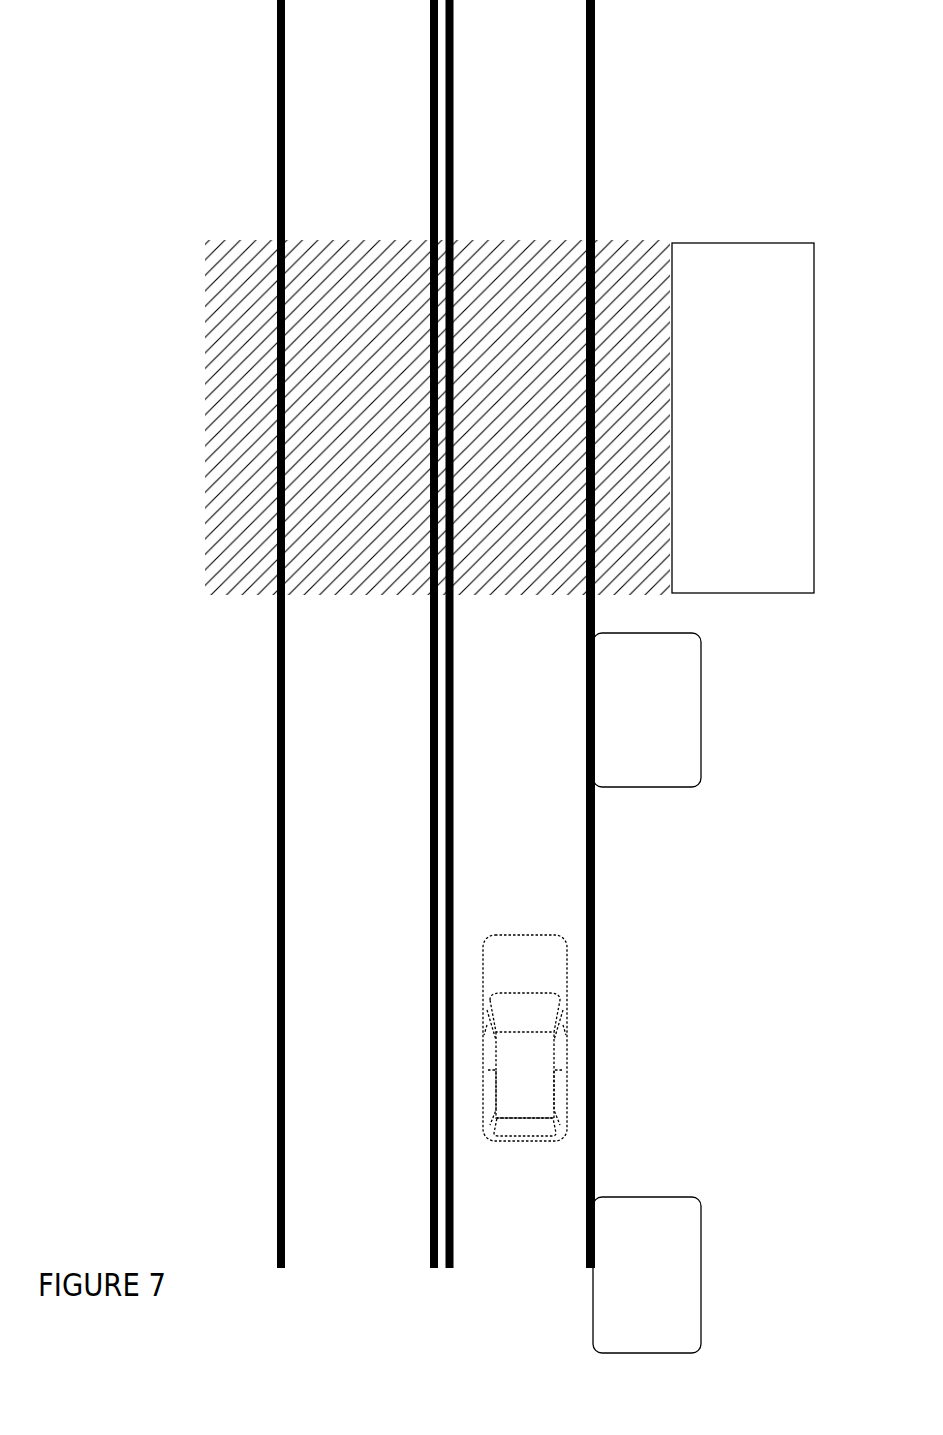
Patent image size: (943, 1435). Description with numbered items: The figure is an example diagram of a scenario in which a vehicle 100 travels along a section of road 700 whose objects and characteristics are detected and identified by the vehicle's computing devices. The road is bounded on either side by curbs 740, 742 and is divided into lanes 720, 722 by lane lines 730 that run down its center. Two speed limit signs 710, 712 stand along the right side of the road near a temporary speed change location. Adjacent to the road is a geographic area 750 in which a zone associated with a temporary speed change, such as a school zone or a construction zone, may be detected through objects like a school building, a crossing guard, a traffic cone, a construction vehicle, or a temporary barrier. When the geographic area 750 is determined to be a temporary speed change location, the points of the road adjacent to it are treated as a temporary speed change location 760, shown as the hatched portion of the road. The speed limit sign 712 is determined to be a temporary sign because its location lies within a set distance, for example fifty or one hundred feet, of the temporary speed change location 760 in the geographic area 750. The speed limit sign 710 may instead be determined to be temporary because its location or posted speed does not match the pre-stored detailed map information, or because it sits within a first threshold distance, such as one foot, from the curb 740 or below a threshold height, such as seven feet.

The section of road 700 is at (459, 676).
The temporary speed change location 760 is at (222, 428).
The geographic area 750 is at (760, 427).
The lane 722 is at (295, 882).
The curb 742 is at (279, 1159).
The lane 720 is at (575, 900).
The curb 740 is at (595, 1158).
The lane lines 730 is at (432, 990).
The speed limit sign 712 is at (684, 712).
The speed limit sign 710 is at (684, 1277).
The vehicle 100 is at (538, 1094).